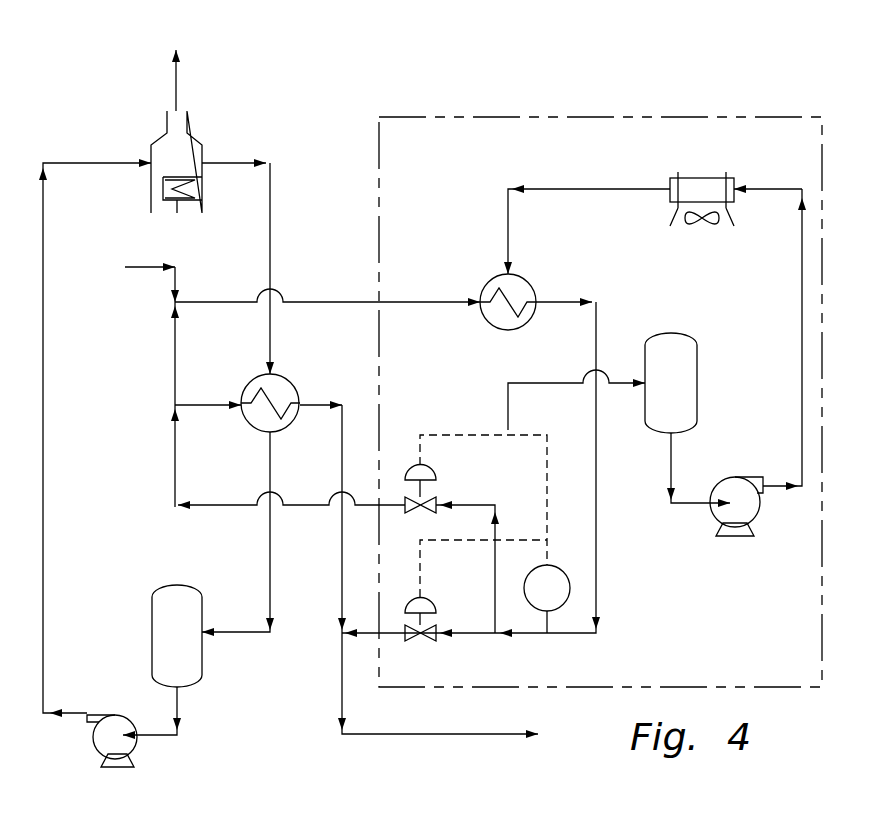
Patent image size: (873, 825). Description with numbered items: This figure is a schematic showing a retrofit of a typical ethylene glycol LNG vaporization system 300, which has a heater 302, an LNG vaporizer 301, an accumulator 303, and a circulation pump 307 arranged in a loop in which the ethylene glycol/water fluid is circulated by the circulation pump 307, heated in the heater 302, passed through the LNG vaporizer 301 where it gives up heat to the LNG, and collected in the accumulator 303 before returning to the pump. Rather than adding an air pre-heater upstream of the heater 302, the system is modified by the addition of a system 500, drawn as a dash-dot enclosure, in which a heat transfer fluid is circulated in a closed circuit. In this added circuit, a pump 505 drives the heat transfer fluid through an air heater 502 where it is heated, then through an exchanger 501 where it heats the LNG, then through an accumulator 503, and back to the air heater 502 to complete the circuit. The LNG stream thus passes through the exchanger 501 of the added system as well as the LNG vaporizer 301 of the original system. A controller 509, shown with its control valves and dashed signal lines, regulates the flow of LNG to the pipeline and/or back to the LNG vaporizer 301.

The ethylene glycol LNG vaporization system 300 is at (105, 114).
The LNG vaporizer 301 is at (282, 377).
The heater 302 is at (194, 138).
The accumulator 303 is at (152, 613).
The circulation pump 307 is at (112, 713).
The system 500 is at (611, 92).
The exchanger 501 is at (492, 326).
The air heater 502 is at (696, 176).
The accumulator 503 is at (697, 360).
The pump 505 is at (737, 482).
The controller 509 is at (448, 435).